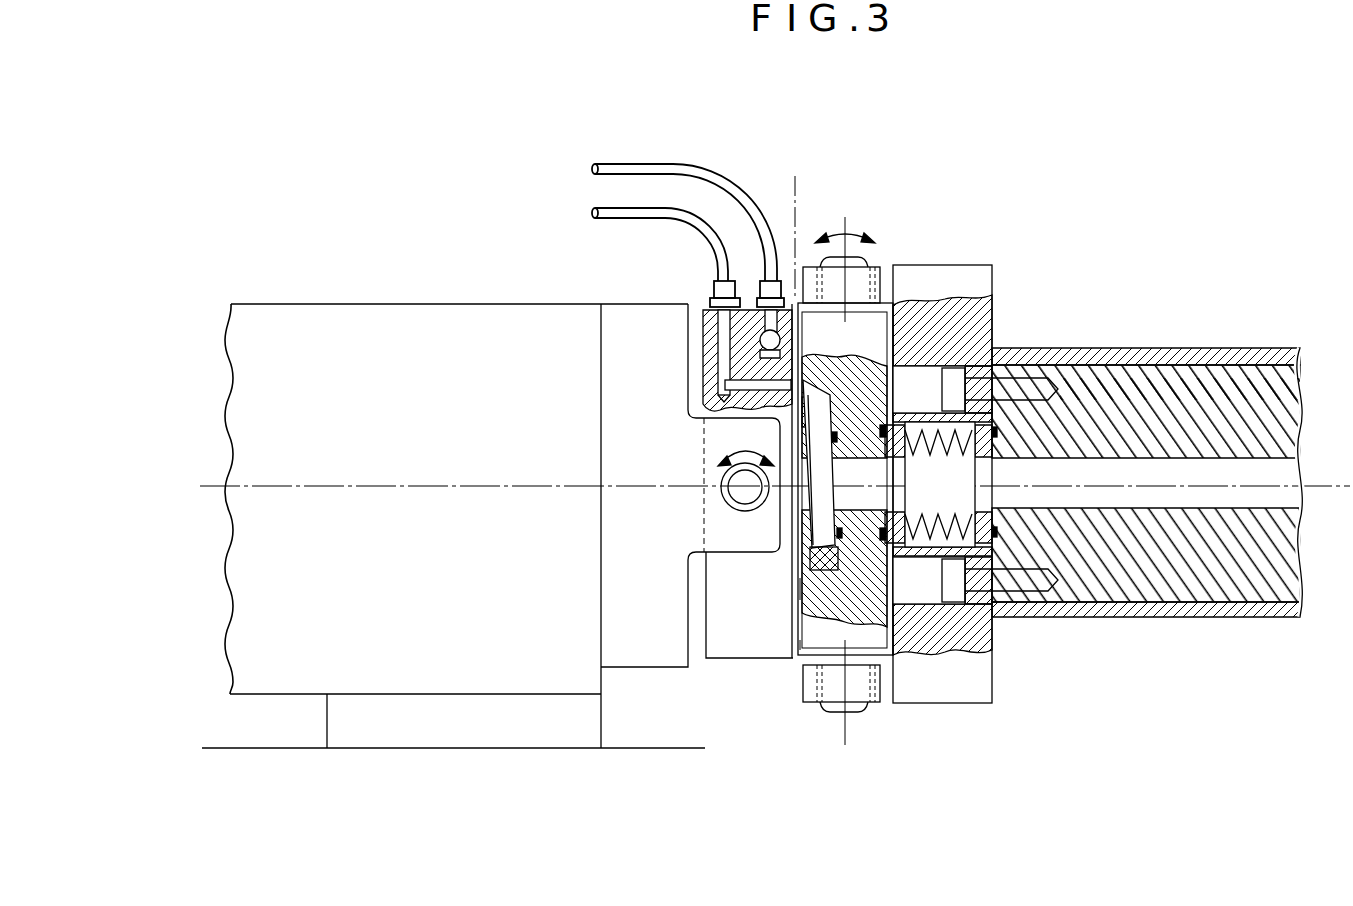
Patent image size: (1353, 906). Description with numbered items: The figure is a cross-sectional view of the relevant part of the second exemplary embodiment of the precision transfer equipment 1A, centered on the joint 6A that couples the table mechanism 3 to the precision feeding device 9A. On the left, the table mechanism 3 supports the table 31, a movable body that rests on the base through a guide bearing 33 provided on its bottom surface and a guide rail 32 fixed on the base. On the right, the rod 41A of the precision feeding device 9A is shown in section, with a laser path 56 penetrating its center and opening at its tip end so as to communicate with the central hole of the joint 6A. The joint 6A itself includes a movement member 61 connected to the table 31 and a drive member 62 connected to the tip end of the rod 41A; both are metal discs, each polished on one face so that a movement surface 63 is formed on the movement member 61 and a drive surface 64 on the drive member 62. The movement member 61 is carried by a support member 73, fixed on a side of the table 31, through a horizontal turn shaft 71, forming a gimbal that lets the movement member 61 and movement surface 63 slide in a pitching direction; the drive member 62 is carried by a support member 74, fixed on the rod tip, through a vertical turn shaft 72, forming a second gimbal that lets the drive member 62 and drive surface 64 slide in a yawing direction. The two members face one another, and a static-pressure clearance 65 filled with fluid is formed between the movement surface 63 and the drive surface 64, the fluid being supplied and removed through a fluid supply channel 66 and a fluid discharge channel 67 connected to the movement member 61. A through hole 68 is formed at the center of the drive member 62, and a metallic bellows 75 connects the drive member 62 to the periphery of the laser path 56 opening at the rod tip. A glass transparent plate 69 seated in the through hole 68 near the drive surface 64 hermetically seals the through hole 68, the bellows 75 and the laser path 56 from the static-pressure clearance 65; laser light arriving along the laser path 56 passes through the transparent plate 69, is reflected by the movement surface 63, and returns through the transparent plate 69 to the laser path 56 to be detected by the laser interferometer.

The precision transfer equipment 1A is at (452, 122).
The table mechanism 3 is at (345, 200).
The joint 6A is at (877, 128).
The precision feeding device 9A is at (1180, 178).
The table 31 is at (311, 301).
The guide rail 32 is at (282, 752).
The guide bearing 33 is at (383, 732).
The rod 41A is at (1125, 348).
The laser path 56 is at (1238, 485).
The movement member 61 is at (722, 648).
The drive member 62 is at (880, 648).
The movement surface 63 is at (800, 645).
The drive surface 64 is at (798, 597).
The static-pressure clearance 65 is at (796, 166).
The fluid supply channel 66 is at (612, 166).
The fluid discharge channel 67 is at (605, 222).
The through hole 68 is at (858, 465).
The transparent plate 69 is at (832, 520).
The horizontal turn shaft 71 is at (722, 472).
The vertical turn shaft 72 is at (835, 712).
The support member 73 is at (648, 301).
The support member 74 is at (950, 693).
The bellows 75 is at (920, 450).